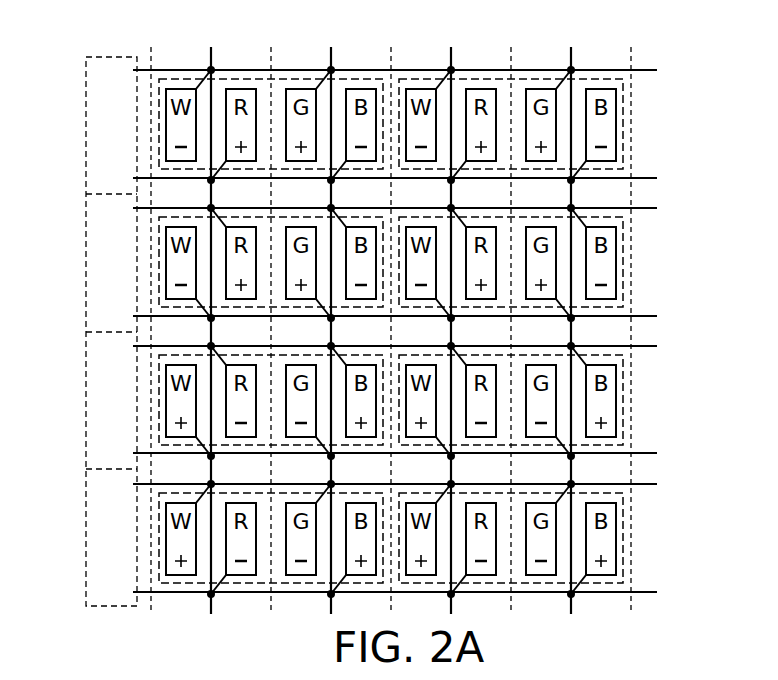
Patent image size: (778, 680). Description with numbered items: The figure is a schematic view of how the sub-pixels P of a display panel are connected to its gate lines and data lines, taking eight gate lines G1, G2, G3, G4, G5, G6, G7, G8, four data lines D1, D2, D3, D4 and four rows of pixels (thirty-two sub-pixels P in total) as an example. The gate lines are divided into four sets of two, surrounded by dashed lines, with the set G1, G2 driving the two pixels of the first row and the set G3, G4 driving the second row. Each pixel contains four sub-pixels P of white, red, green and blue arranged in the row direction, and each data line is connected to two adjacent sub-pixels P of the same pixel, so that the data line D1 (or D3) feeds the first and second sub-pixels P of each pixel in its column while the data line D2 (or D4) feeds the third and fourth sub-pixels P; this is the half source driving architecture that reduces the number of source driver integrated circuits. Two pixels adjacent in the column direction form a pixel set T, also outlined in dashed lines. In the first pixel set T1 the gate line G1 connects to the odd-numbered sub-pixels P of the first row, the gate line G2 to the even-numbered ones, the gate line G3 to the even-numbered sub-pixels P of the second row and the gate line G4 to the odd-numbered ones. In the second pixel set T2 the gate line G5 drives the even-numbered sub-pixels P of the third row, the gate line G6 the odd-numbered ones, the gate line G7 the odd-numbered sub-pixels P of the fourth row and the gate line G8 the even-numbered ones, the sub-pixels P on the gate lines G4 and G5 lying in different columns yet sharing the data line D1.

The first gate line G1 is at (378, 70).
The second gate line G2 is at (378, 178).
The third gate line G3 is at (378, 208).
The fourth gate line G4 is at (378, 316).
The first gate line G5 is at (378, 346).
The second gate line G6 is at (378, 453).
The third gate line G7 is at (378, 484).
The fourth gate line G8 is at (378, 592).
The data line D1 is at (208, 318).
The data line D2 is at (328, 318).
The data line D3 is at (448, 318).
The data line D4 is at (568, 318).
The sub-pixel P is at (240, 89).
The pixel set T is at (623, 125).
The first pixel set T1 is at (177, 79).
The second pixel set T2 is at (160, 393).